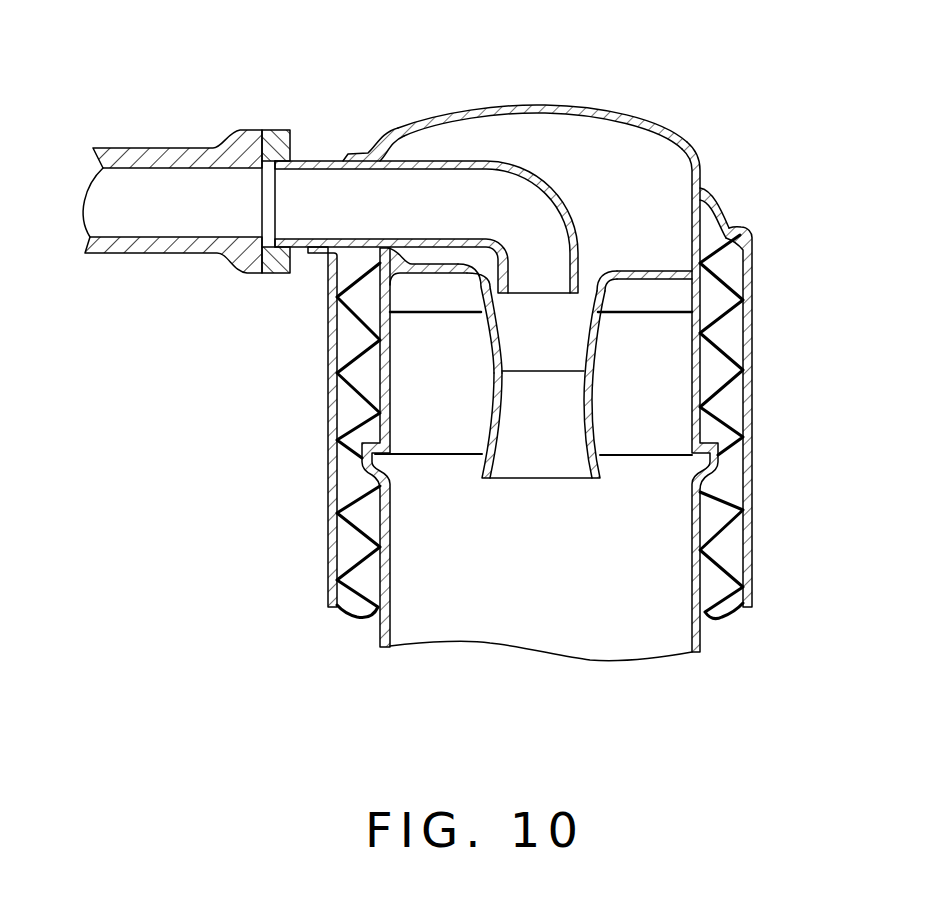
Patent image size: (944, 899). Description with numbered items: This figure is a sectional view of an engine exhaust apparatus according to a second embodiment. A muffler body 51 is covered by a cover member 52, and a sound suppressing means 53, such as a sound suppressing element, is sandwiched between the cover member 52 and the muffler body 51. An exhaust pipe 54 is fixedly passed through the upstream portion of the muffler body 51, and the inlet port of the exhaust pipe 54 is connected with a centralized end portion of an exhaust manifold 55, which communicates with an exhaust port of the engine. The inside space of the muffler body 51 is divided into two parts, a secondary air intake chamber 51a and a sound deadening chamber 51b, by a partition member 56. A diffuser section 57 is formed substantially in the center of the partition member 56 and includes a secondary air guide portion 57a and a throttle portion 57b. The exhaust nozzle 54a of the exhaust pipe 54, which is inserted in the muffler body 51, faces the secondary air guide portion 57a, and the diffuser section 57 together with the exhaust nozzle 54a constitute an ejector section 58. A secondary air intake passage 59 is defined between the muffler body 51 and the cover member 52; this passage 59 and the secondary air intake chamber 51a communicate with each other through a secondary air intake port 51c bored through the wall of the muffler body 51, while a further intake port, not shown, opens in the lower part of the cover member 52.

The muffler body 51 is at (411, 127).
The secondary air intake chamber 51a is at (552, 133).
The sound deadening chamber 51b is at (490, 632).
The secondary air intake port 51c is at (728, 227).
The cover member 52 is at (753, 350).
The sound suppressing means 53 is at (722, 493).
The exhaust pipe 54 is at (312, 158).
The exhaust nozzle 54a is at (538, 280).
The exhaust manifold 55 is at (199, 148).
The partition member 56 is at (655, 271).
The diffuser section 57 is at (586, 394).
The secondary air guide portion 57a is at (499, 337).
The throttle portion 57b is at (493, 400).
The ejector section 58 is at (598, 268).
The secondary air intake passage 59 is at (728, 423).